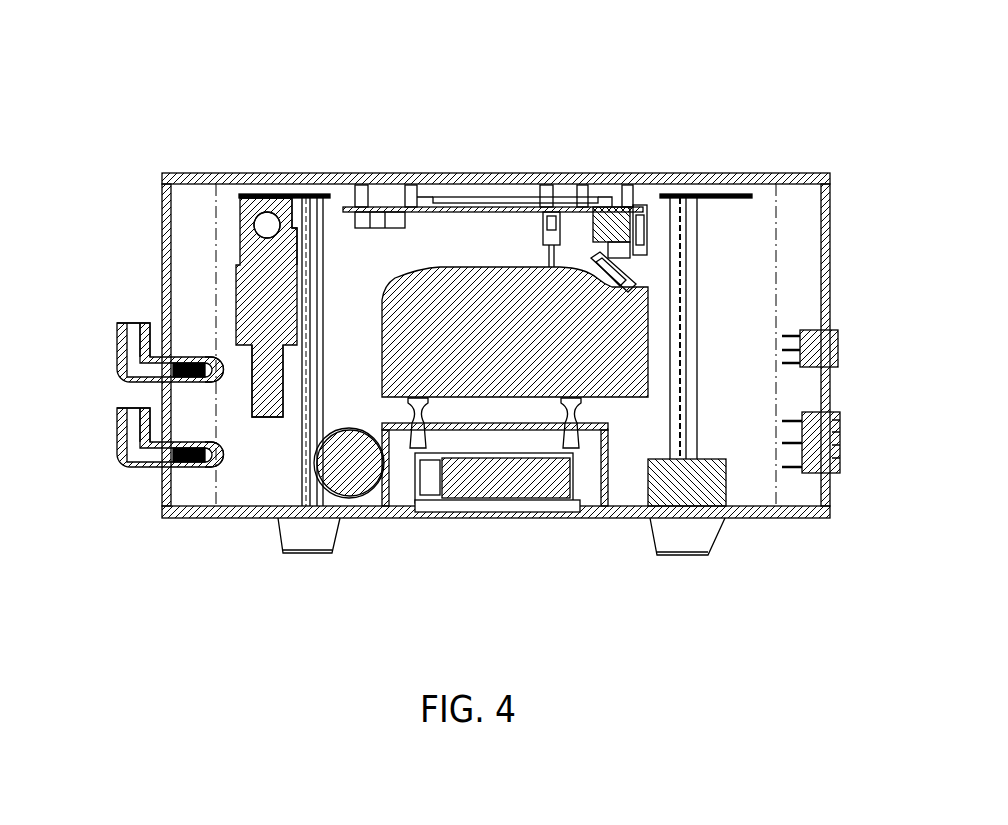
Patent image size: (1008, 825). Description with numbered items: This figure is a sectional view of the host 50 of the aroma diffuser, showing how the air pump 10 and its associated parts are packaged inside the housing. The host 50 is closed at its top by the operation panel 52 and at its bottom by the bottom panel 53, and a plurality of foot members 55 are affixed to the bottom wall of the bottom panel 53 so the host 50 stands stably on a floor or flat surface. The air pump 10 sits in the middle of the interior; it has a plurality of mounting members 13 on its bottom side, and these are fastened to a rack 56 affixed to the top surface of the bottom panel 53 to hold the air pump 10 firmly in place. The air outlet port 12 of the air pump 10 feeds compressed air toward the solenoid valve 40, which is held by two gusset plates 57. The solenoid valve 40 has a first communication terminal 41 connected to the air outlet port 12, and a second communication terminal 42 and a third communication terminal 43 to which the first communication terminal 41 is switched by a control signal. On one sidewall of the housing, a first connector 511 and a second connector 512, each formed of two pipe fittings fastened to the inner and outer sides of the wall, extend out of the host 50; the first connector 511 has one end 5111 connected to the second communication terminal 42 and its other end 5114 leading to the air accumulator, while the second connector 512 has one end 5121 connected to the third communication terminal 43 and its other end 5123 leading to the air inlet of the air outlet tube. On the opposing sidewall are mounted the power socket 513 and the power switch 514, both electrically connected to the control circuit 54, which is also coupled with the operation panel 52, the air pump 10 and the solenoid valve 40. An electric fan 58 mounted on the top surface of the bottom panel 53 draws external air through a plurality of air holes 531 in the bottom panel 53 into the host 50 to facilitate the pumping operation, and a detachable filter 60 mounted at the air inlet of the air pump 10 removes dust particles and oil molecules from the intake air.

The air pump 10 is at (497, 268).
The air outlet port 12 is at (590, 262).
The mounting member 13 is at (590, 412).
The solenoid valve 40 is at (230, 215).
The first communication terminal 41 is at (245, 238).
The second communication terminal 42 is at (268, 196).
The third communication terminal 43 is at (273, 417).
The host 50 is at (650, 172).
The operation panel 52 is at (505, 173).
The bottom panel 53 is at (375, 520).
The control circuit 54 is at (473, 173).
The foot member 55 is at (698, 541).
The rack 56 is at (628, 512).
The gusset plate 57 is at (300, 178).
The electric fan 58 is at (483, 487).
The filter 60 is at (345, 475).
The first connector 511 is at (130, 455).
The second connector 512 is at (135, 370).
The power socket 513 is at (835, 465).
The power switch 514 is at (838, 360).
The air hole 531 is at (565, 512).
The one end of first connector 5111 is at (216, 470).
The other end of first connector 5114 is at (130, 415).
The one end of second connector 5121 is at (216, 360).
The other end of second connector 5123 is at (130, 328).